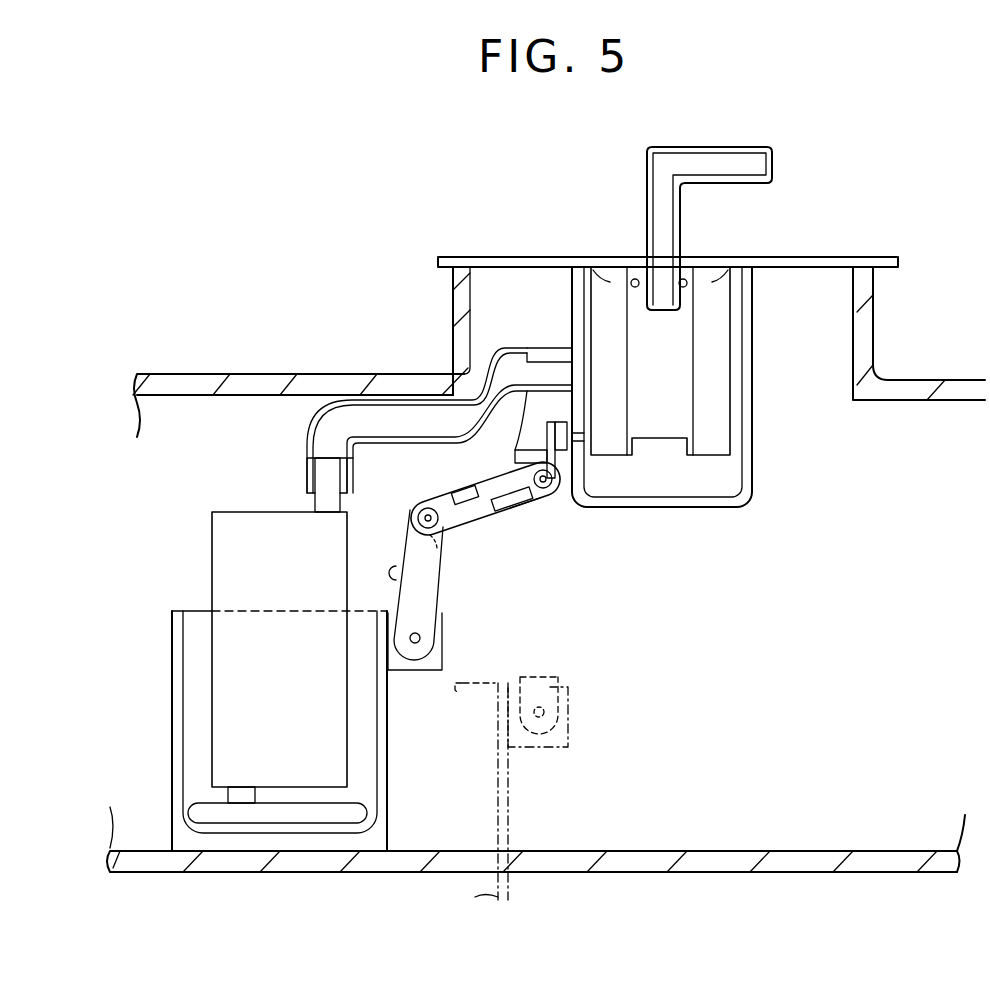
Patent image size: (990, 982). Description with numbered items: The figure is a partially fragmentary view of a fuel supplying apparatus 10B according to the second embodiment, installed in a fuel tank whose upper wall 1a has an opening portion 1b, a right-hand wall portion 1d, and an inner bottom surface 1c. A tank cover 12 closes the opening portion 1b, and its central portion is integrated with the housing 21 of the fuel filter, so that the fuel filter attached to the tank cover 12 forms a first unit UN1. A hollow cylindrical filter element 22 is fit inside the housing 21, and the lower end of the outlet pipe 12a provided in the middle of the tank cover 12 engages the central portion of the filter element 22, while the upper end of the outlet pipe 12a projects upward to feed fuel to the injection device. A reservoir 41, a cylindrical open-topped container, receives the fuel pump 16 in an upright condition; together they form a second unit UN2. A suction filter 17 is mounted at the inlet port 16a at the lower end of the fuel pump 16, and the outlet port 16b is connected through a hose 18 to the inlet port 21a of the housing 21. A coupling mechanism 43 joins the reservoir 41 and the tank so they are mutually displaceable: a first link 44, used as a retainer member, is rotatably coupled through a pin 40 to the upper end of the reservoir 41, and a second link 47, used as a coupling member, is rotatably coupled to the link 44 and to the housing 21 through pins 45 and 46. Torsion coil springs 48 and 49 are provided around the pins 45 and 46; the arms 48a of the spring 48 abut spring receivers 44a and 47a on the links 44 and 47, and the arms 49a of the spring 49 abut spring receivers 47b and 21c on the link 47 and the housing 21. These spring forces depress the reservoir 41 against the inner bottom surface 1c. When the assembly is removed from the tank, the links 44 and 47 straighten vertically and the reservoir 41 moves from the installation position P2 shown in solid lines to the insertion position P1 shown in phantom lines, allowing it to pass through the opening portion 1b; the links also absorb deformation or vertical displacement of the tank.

The upper wall 1a is at (170, 373).
The opening portion 1b is at (477, 320).
The inner bottom surface 1c is at (618, 851).
The right wall of base 1d is at (919, 333).
The tank cover 12 is at (548, 257).
The outlet pipe 12a is at (740, 147).
The fuel pump 16 is at (232, 552).
The inlet port 16a is at (240, 792).
The outlet port 16b is at (320, 480).
The suction filter 17 is at (218, 815).
The hose 18 is at (307, 432).
The housing 21 is at (745, 440).
The inlet port 21a is at (553, 350).
The spring receiver 21c is at (578, 440).
The filter element 22 is at (707, 370).
The pin 40 is at (415, 652).
The reservoir 41 is at (387, 780).
The coupling mechanism 43 is at (553, 618).
The first link 44 is at (423, 587).
The spring receiver 44a is at (412, 576).
The pin 45 is at (440, 528).
The pin 46 is at (552, 455).
The second link 47 is at (492, 485).
The spring receiver 47a is at (478, 500).
The spring receiver 47b is at (530, 515).
The torsion coil spring 48 is at (423, 506).
The arms 48a is at (513, 512).
The torsion coil spring 49 is at (520, 452).
The arms 49a is at (567, 452).
The first unit UN1 is at (757, 408).
The second unit UN2 is at (151, 591).
The fuel supplying apparatus 10B is at (795, 497).
The insertion position P1 is at (520, 832).
The installation position P2 is at (149, 676).